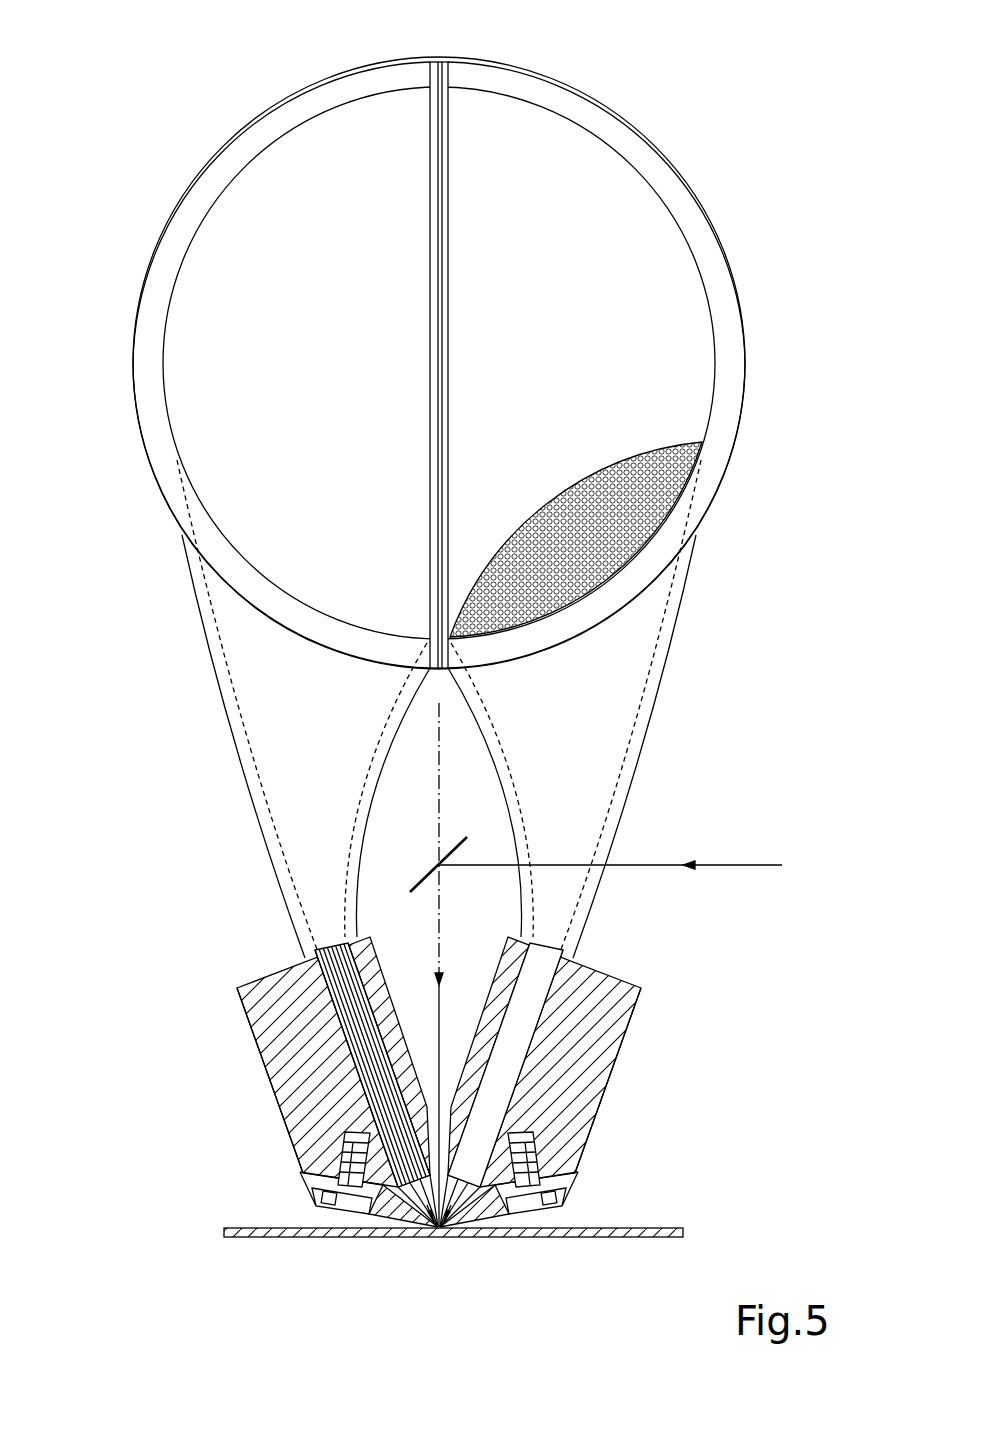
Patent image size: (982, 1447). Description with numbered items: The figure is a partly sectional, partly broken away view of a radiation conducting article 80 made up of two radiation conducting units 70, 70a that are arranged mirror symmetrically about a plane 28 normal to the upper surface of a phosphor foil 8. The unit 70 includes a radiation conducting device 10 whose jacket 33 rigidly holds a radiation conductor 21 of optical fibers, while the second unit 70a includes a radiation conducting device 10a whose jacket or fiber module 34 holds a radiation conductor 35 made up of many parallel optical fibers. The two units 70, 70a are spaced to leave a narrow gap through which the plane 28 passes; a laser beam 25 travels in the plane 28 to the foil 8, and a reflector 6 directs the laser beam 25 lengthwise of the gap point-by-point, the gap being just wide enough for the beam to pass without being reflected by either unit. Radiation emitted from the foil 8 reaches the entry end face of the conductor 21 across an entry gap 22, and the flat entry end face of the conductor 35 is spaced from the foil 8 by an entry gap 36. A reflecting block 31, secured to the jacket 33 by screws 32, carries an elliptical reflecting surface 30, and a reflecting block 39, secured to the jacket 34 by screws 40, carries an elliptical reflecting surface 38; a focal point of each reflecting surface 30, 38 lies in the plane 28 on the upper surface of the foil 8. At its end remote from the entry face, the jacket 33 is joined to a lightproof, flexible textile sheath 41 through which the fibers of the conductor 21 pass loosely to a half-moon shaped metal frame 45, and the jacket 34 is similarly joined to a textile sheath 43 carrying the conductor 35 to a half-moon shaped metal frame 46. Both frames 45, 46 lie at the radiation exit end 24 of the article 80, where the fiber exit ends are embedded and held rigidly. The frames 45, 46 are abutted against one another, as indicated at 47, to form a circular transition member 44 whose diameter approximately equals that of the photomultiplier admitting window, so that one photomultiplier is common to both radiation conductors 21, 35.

The radiation conducting article 80 is at (148, 98).
The metal frame 46 is at (276, 118).
The abutment 47 is at (436, 46).
The circular transition member 44 is at (484, 40).
The metal frame 45 is at (620, 108).
The radiation exit end 24 is at (655, 242).
The radiation conductor 21 is at (688, 483).
The textile sheath 41 is at (672, 613).
The textile sheath 43 is at (262, 828).
The plane 28 is at (441, 748).
The reflector 6 is at (418, 874).
The laser beam 25 is at (757, 864).
The radiation conducting device 10a is at (228, 979).
The radiation conducting device 10 is at (650, 979).
The radiation conductor 35 is at (330, 958).
The jacket 34 is at (255, 1000).
The jacket 33 is at (620, 1005).
The radiation conducting unit 70a is at (223, 1103).
The radiation conducting unit 70 is at (666, 1093).
The reflecting block 39 is at (318, 1185).
The reflecting block 31 is at (578, 1175).
The screws 40 is at (323, 1210).
The screws 32 is at (545, 1210).
The reflecting surface 38 is at (392, 1215).
The reflecting surface 30 is at (493, 1217).
The entry gap 36 is at (431, 1232).
The entry gap 22 is at (447, 1232).
The phosphor foil 8 is at (668, 1240).